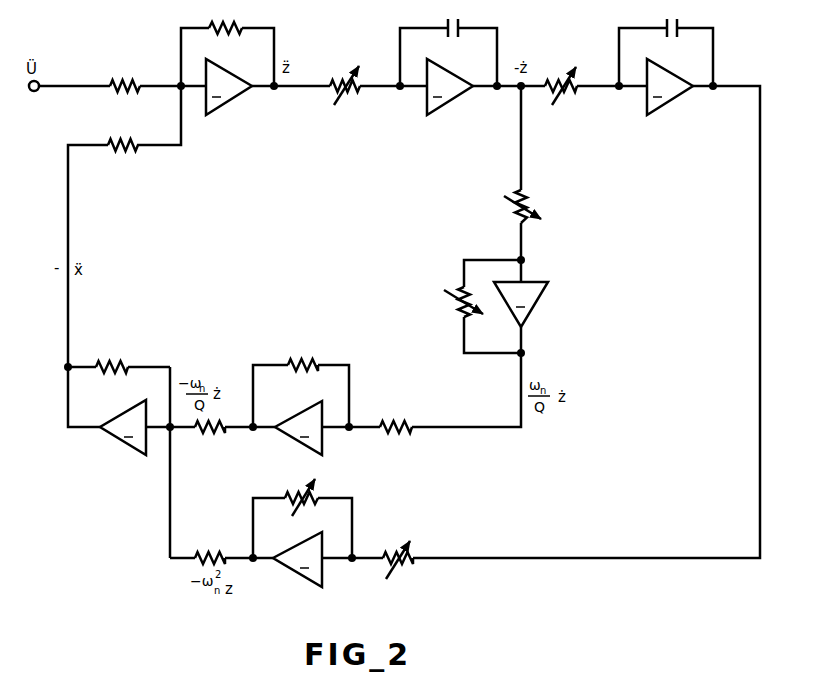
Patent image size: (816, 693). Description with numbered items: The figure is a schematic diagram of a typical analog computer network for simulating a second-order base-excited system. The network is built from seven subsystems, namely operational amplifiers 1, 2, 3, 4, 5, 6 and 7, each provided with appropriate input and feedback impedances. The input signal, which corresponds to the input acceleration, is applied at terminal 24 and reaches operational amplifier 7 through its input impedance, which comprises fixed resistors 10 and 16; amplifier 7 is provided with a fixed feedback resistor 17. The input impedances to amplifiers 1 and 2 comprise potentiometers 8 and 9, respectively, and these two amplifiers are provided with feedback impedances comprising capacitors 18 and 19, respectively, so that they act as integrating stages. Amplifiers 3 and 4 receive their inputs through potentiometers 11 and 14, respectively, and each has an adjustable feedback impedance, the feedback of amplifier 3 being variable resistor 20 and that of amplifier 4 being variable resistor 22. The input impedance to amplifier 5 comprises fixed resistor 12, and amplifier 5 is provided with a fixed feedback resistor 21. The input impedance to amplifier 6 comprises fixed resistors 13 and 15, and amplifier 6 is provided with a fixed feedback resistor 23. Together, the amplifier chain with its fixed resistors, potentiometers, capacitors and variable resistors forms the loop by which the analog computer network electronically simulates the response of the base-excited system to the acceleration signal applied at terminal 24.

The operational amplifier 1 is at (450, 87).
The operational amplifier 2 is at (670, 87).
The operational amplifier 3 is at (521, 304).
The operational amplifier 4 is at (297, 559).
The operational amplifier 5 is at (298, 428).
The operational amplifier 6 is at (123, 427).
The operational amplifier 7 is at (229, 87).
The potentiometer 8 is at (340, 78).
The potentiometer 9 is at (558, 80).
The fixed resistor 10 is at (125, 79).
The potentiometer 11 is at (527, 196).
The fixed resistor 12 is at (398, 420).
The fixed resistor 13 is at (214, 434).
The potentiometer 14 is at (396, 549).
The fixed resistor 15 is at (208, 551).
The fixed resistor 16 is at (134, 126).
The fixed feedback resistor 17 is at (234, 25).
The capacitor 18 is at (460, 25).
The capacitor 19 is at (680, 25).
The variable resistor 20 is at (458, 291).
The fixed feedback resistor 21 is at (301, 360).
The variable resistor 22 is at (296, 491).
The fixed feedback resistor 23 is at (114, 361).
The terminal 24 is at (35, 92).